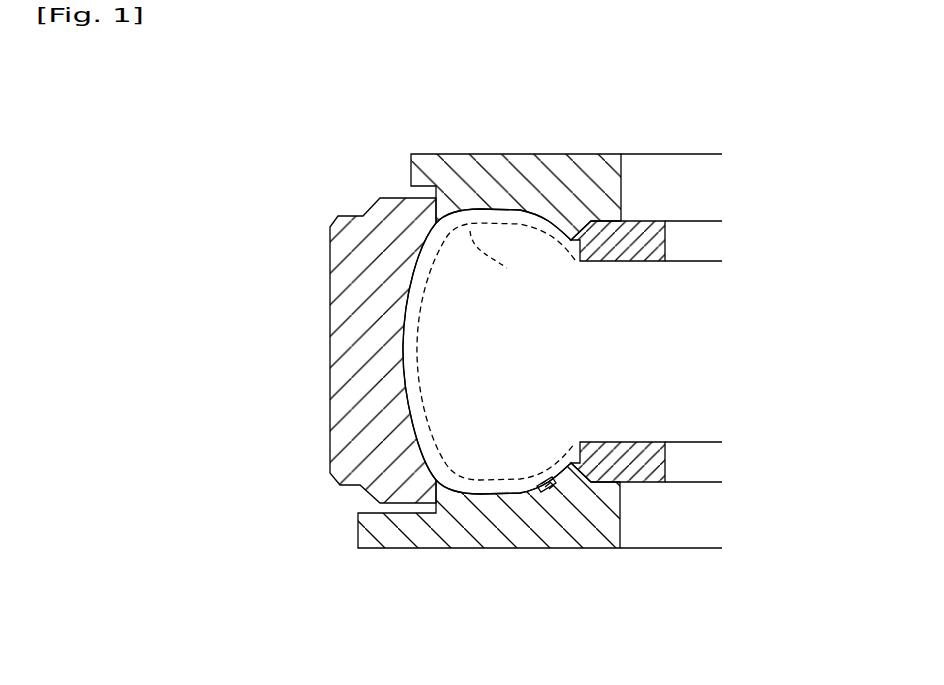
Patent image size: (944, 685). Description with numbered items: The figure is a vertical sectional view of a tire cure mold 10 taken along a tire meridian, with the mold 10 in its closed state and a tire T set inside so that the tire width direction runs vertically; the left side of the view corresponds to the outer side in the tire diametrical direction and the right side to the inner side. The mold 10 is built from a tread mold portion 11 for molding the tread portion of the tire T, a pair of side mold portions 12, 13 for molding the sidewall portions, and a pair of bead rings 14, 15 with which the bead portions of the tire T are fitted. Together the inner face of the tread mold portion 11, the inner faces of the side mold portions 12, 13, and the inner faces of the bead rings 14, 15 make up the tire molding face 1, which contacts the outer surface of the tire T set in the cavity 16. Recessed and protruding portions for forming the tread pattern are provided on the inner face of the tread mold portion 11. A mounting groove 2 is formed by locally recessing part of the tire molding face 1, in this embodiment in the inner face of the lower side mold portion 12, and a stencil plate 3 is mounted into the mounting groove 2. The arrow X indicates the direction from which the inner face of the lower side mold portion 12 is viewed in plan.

The tire molding face 1 is at (407, 350).
The mounting groove 2 is at (557, 508).
The stencil plate 3 is at (541, 469).
The tire cure mold 10 is at (335, 134).
The tread mold portion 11 is at (330, 292).
The side mold portion 12 is at (528, 550).
The side mold portion 13 is at (528, 153).
The bead ring 14 is at (635, 442).
The bead ring 15 is at (637, 262).
The cavity 16 is at (548, 346).
The tire T is at (491, 259).
The arrow X is at (504, 419).